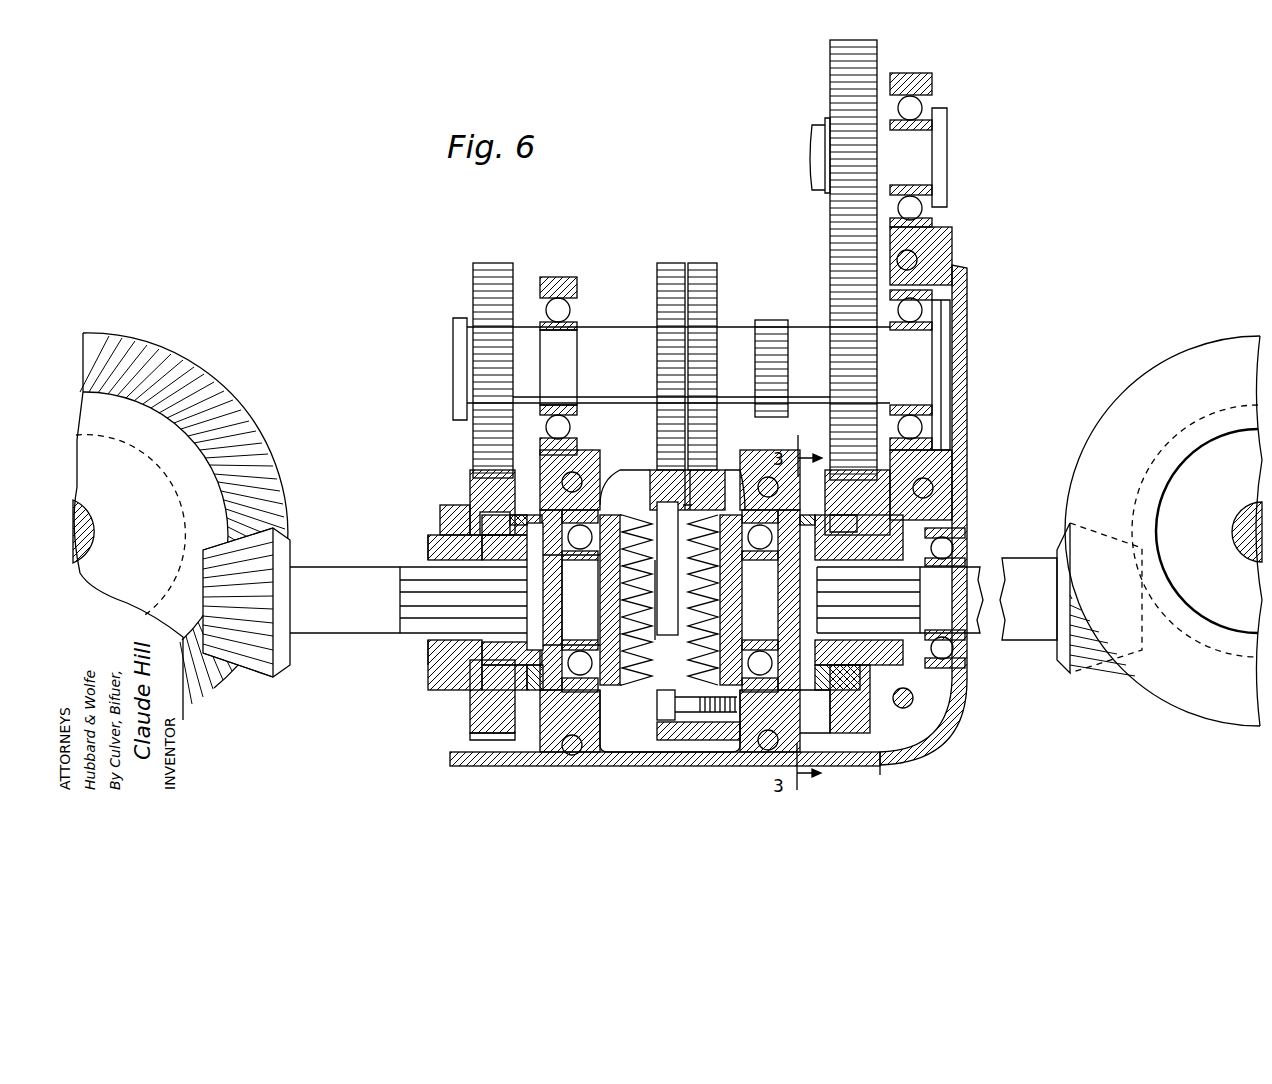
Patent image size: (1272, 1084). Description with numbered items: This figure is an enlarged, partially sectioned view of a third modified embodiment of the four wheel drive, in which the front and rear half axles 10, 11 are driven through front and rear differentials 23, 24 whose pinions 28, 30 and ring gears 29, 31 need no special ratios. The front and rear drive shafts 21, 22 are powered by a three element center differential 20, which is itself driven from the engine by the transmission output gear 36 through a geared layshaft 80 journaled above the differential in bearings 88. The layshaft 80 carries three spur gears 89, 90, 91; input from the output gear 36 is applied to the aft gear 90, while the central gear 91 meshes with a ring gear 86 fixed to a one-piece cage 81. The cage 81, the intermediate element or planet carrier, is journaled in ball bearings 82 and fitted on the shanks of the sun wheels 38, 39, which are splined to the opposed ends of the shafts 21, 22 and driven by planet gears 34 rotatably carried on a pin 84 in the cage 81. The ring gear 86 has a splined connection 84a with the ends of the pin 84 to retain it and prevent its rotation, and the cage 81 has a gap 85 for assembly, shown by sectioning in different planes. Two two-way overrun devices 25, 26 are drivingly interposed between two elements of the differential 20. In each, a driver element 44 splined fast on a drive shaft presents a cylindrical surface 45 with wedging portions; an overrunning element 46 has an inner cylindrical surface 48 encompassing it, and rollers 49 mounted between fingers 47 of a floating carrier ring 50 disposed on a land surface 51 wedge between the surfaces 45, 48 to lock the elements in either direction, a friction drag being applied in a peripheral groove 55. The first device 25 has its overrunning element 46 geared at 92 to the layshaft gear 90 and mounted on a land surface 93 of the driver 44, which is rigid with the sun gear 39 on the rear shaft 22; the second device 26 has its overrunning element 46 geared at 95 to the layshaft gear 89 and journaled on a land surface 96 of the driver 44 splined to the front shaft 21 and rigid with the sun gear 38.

The front live half axles 10 is at (112, 530).
The rear live half axles 11 is at (1232, 515).
The center differential 20 is at (613, 474).
The front drive shaft 21 is at (345, 567).
The rear drive shaft 22 is at (1010, 565).
The front differential 23 is at (118, 432).
The rear differential 24 is at (1212, 440).
The first two-way overrun device 25 is at (821, 712).
The second two-way overrun device 26 is at (526, 710).
The front differential pinion 28 is at (265, 668).
The front ring gear 29 is at (268, 480).
The rear differential pinion 30 is at (1092, 672).
The rear ring gear 31 is at (1150, 696).
The planet gears 34 is at (628, 520).
The output gear 36 is at (835, 90).
The sun wheel 38 is at (648, 640).
The sun wheel 39 is at (700, 640).
The driver element 44 is at (470, 665).
The cylindrical surface 45 is at (482, 524).
The overrunning element 46 is at (475, 498).
The fingers 47 is at (865, 672).
The inner cylindrical surface 48 is at (520, 514).
The rollers 49 is at (465, 516).
The carrier ring 50 is at (520, 652).
The land surface 51 is at (530, 522).
The peripheral groove 55 is at (535, 690).
The layshaft 80 is at (630, 330).
The cage 81 is at (612, 520).
The ball bearings 82 is at (595, 665).
The pin 84 is at (666, 628).
The splined connection 84a is at (672, 503).
The gap 85 is at (654, 697).
The ring gear 86 is at (672, 486).
The bearings 88 is at (578, 312).
The spur gear 89 is at (491, 265).
The spur gear 90 is at (840, 312).
The spur gear 91 is at (697, 268).
The gearing 92 is at (848, 756).
The land surface 93 is at (922, 540).
The gearing 95 is at (472, 732).
The land surface 96 is at (440, 538).